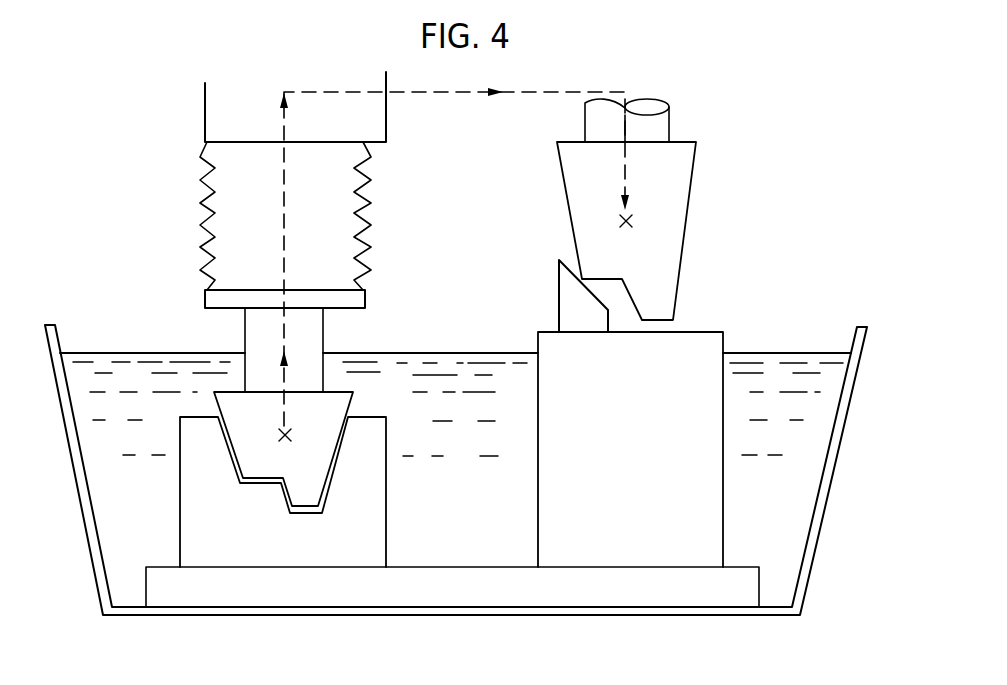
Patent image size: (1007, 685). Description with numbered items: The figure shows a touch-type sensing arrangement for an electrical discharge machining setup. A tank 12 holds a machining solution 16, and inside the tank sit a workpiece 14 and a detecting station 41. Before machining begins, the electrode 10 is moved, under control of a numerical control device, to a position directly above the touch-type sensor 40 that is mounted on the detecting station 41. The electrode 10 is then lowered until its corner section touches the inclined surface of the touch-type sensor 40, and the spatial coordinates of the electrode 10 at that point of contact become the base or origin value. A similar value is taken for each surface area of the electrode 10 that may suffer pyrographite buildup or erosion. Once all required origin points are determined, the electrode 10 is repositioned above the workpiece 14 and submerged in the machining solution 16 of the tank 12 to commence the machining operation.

The electrode 10 is at (338, 404).
The tank 12 is at (838, 457).
The workpiece 14 is at (382, 517).
The machining solution 16 is at (768, 353).
The touch-type sensor 40 is at (565, 292).
The detecting station 41 is at (718, 515).